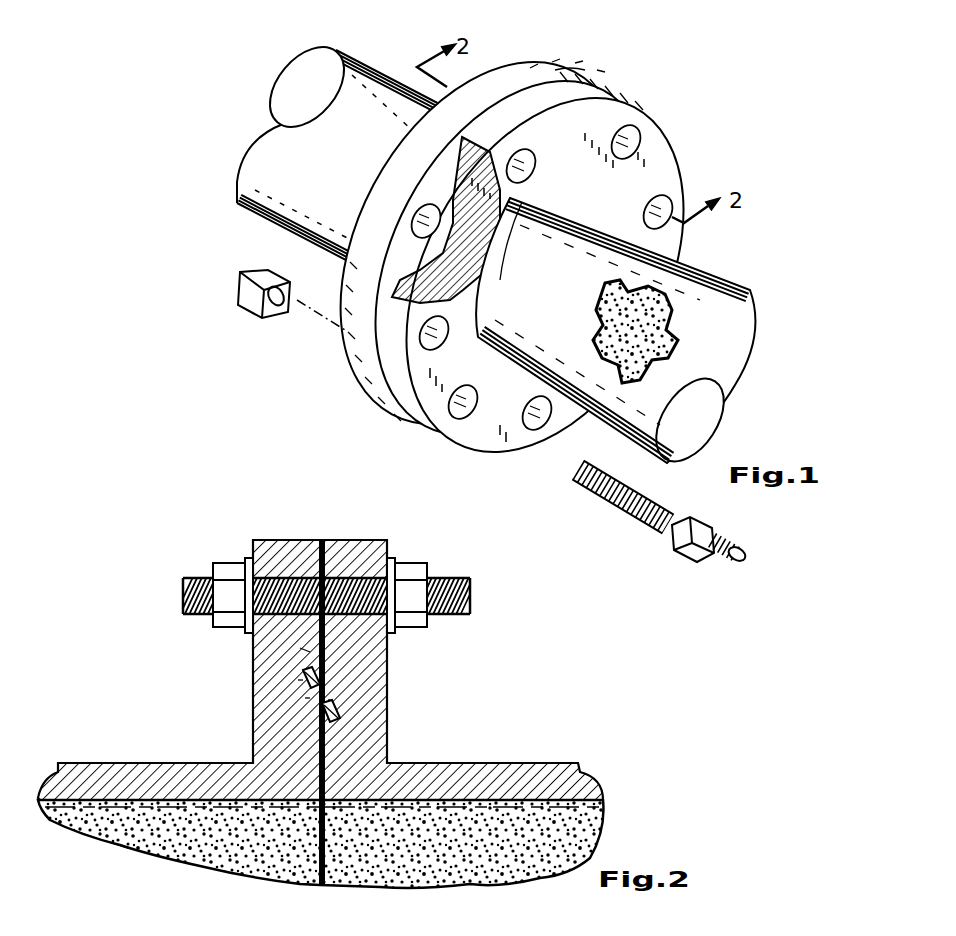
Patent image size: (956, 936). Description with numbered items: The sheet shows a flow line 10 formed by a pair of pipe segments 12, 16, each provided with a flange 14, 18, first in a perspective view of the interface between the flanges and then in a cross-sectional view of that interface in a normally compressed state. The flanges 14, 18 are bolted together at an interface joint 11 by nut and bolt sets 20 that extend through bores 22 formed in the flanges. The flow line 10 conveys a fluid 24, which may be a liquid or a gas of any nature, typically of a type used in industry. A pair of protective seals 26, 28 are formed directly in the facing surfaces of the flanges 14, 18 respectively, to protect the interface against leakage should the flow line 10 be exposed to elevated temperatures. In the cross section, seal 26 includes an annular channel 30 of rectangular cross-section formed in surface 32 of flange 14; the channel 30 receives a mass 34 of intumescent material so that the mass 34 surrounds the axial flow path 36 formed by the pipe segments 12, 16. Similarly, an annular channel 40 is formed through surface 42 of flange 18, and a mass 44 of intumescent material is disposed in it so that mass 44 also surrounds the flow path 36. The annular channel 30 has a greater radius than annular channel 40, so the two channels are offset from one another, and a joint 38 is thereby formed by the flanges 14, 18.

In FIG. 1, the flow line 10 is at (762, 170).
In FIG. 2, the flow line 10 is at (506, 674).
In FIG. 1, the interface joint 11 is at (551, 80).
In FIG. 1, the pipe segment 12 is at (247, 205).
In FIG. 2, the pipe segment 12 is at (165, 770).
In FIG. 1, the flange 14 is at (358, 398).
In FIG. 2, the flange 14 is at (290, 540).
In FIG. 1, the pipe segment 16 is at (738, 278).
In FIG. 2, the pipe segment 16 is at (495, 770).
In FIG. 1, the flange 18 is at (612, 103).
In FIG. 2, the flange 18 is at (378, 540).
In FIG. 1, the nut and bolt sets 20 is at (584, 549).
In FIG. 2, the nut and bolt sets 20 is at (447, 564).
In FIG. 1, the bores 22 is at (636, 142).
In FIG. 2, the bores 22 is at (333, 540).
In FIG. 1, the fluid 24 is at (672, 316).
In FIG. 2, the fluid 24 is at (410, 878).
In FIG. 1, the protective seal 26 is at (437, 262).
In FIG. 1, the protective seal 28 is at (526, 202).
In FIG. 2, the annular channel 30 is at (303, 680).
In FIG. 2, the surface 32 is at (325, 672).
In FIG. 2, the mass of intumescent material 34 is at (310, 698).
In FIG. 2, the axial flow path 36 is at (122, 851).
In FIG. 2, the joint 38 is at (302, 883).
In FIG. 2, the annular channel 40 is at (332, 700).
In FIG. 2, the surface 42 is at (310, 652).
In FIG. 2, the mass of intumescent material 44 is at (340, 712).